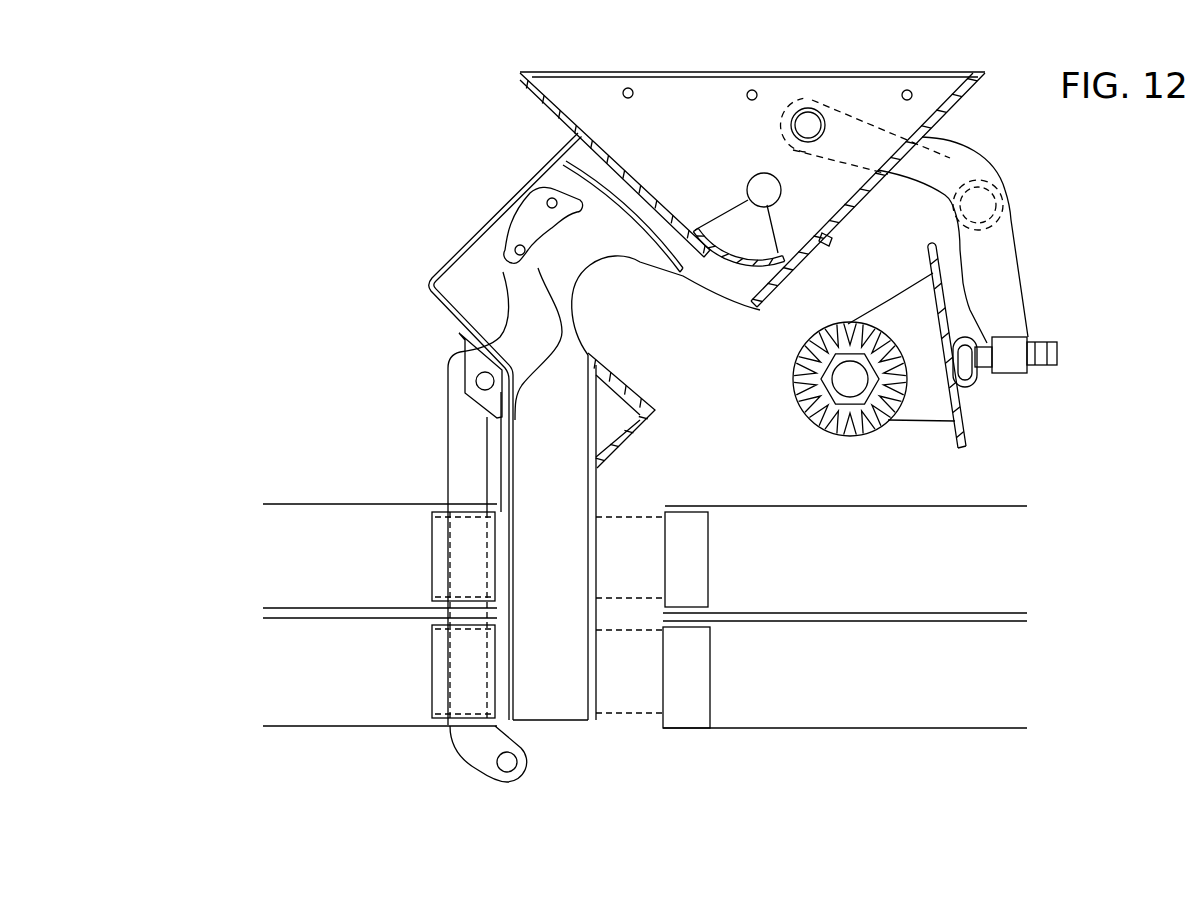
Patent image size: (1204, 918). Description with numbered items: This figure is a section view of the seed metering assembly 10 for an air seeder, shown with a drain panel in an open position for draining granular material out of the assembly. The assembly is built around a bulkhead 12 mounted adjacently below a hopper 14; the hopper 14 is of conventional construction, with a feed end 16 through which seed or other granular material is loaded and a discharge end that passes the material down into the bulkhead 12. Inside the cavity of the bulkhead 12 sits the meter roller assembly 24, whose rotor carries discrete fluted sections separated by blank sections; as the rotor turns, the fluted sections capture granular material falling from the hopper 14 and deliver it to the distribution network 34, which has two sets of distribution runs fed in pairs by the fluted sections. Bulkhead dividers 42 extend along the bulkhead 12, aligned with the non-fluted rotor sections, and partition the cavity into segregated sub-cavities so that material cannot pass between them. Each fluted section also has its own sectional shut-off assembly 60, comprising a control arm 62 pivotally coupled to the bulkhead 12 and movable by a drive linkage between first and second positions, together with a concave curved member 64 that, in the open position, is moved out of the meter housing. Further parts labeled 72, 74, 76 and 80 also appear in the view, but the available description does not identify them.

The seed metering assembly 10 is at (156, 134).
The bulkhead 12 is at (507, 202).
The hopper 14 is at (968, 88).
The feed end 16 is at (857, 64).
The meter roller assembly 24 is at (812, 444).
The distribution network 34 is at (300, 708).
The bulkhead dividers 42 is at (732, 290).
The sectional shut-off assembly 60 is at (429, 459).
The control arm 62 is at (463, 407).
The concave curved member 64 is at (649, 241).
The vertical column 72 is at (691, 388).
The adjustment bar 74 is at (962, 416).
The curved arm 76 is at (1012, 278).
The strap 80 is at (918, 420).